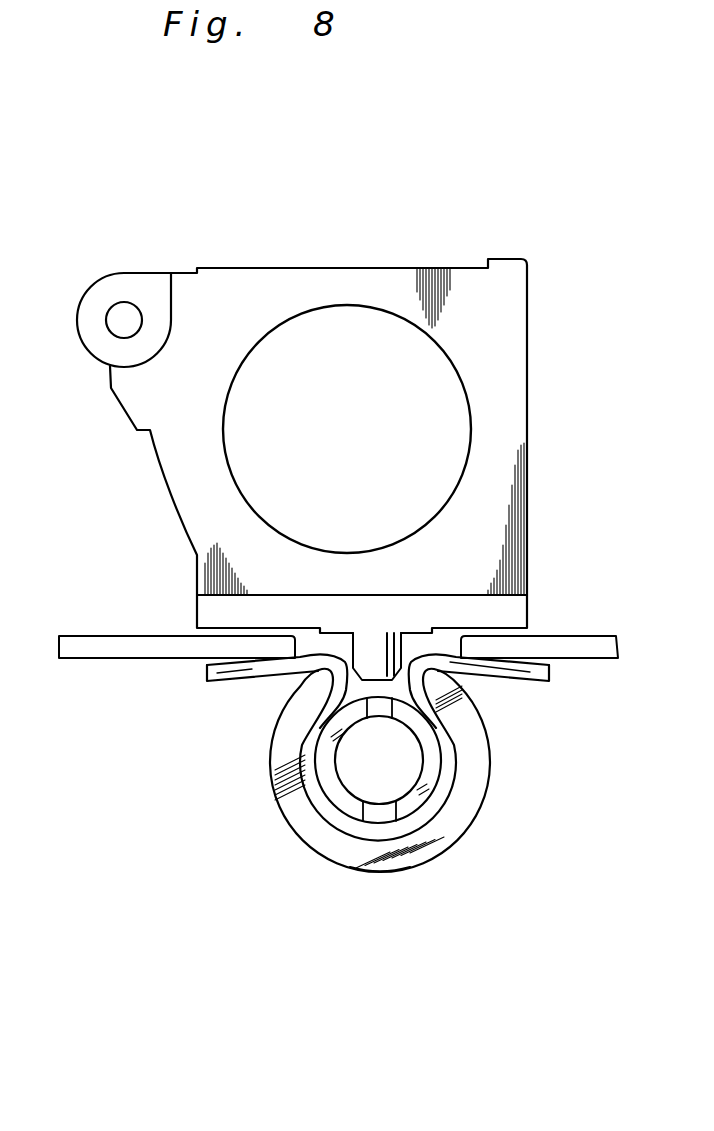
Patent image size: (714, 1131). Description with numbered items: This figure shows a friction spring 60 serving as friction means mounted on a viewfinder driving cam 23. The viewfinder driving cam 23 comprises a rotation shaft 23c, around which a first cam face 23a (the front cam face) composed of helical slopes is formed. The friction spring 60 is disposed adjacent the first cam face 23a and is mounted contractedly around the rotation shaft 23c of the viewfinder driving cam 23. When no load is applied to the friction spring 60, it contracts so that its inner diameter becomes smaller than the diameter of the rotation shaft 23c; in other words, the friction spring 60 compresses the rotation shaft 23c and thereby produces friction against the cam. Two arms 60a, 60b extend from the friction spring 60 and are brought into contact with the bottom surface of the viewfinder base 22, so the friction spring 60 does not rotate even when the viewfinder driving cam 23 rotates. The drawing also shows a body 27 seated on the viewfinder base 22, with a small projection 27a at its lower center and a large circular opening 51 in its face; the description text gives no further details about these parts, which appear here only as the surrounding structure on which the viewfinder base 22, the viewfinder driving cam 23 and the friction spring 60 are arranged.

The viewfinder base 22 is at (587, 647).
The viewfinder driving cam 23 is at (459, 841).
The first cam face 23a is at (391, 873).
The rotation shaft 23c is at (347, 795).
The housing body 27 is at (472, 278).
The projection of housing body 27a is at (373, 652).
The circular opening 51 is at (270, 358).
The friction spring 60 is at (473, 783).
The arm of friction spring 60a is at (232, 682).
The arm of friction spring 60b is at (518, 682).